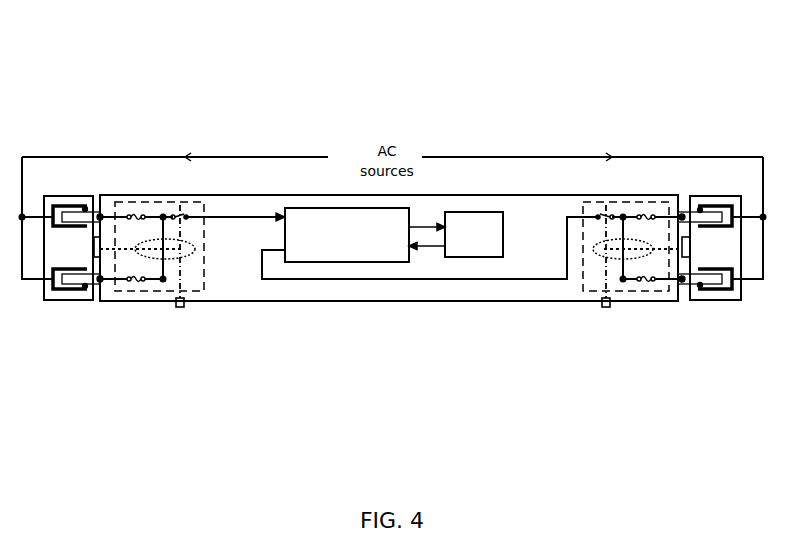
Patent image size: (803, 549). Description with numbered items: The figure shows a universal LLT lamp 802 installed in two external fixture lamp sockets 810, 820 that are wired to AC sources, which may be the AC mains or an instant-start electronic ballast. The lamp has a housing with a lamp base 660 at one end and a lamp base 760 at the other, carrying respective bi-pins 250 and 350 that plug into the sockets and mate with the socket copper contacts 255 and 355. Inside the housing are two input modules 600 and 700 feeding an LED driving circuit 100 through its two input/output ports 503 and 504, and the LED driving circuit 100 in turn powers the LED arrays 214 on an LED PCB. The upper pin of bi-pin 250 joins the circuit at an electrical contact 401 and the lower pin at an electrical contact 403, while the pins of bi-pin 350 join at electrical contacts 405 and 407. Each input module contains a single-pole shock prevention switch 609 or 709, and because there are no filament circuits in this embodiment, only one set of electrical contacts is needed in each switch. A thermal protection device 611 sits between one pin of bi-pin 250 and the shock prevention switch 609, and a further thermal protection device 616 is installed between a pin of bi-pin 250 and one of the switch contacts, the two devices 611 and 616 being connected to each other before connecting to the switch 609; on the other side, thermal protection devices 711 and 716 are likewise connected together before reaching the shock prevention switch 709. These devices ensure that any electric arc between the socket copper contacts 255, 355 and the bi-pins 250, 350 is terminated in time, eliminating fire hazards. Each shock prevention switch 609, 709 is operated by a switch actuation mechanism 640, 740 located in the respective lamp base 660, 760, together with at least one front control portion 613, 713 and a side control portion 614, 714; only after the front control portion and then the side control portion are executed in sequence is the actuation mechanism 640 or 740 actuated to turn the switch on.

The LED driving circuit 100 is at (379, 263).
The LED arrays 214 is at (471, 258).
The bi-pin 250 is at (65, 218).
The socket copper contact 255 is at (83, 209).
The bi-pin 350 is at (716, 215).
The socket copper contact 355 is at (702, 208).
The electrical contact 401 is at (99, 214).
The electrical contact 403 is at (101, 282).
The electrical contact 405 is at (683, 213).
The electrical contact 407 is at (681, 283).
The input/output port 503 is at (259, 216).
The input/output port 504 is at (309, 281).
The input module 600 is at (192, 203).
The shock prevention switch 609 is at (173, 210).
The thermal protection device 611 is at (139, 212).
The front control portion 613 is at (95, 258).
The side control portion 614 is at (182, 308).
The thermal protection device 616 is at (144, 284).
The actuation mechanism 640 is at (185, 258).
The lamp base 660 is at (120, 200).
The input module 700 is at (593, 200).
The shock prevention switch 709 is at (610, 214).
The thermal protection device 711 is at (643, 212).
The front control portion 713 is at (690, 257).
The side control portion 714 is at (605, 308).
The thermal protection device 716 is at (641, 284).
The actuation mechanism 740 is at (597, 257).
The lamp base 760 is at (666, 198).
The universal LLT lamp 802 is at (468, 193).
The external fixture lamp socket 810 is at (86, 303).
The external fixture lamp socket 820 is at (702, 305).